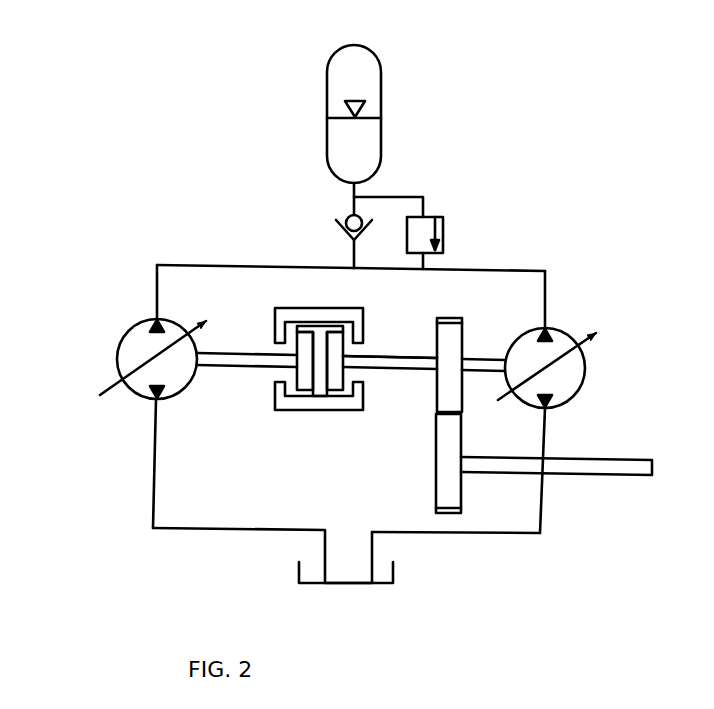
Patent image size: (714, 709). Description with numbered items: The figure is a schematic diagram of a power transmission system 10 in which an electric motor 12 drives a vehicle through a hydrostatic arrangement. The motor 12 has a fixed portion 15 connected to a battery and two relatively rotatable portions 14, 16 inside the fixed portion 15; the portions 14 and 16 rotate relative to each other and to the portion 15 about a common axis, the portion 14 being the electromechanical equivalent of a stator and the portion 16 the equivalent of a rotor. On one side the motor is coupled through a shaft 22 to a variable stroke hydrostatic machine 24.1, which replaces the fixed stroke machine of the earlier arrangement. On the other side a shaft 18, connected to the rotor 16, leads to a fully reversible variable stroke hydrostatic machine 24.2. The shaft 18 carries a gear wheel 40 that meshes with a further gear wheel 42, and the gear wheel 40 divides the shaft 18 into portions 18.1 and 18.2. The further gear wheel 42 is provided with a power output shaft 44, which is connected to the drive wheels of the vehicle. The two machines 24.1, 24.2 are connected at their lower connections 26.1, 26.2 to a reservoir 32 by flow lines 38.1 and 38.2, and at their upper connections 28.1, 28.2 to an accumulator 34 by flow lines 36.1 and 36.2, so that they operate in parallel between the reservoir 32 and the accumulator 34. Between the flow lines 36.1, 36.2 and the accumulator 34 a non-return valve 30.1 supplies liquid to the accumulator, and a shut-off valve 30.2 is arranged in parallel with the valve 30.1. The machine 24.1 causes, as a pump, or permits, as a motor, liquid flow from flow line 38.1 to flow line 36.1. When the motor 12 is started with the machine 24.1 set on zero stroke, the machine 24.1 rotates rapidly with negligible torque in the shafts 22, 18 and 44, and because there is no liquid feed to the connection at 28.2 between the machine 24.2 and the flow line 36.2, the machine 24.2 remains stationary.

The power transmission system 10 is at (522, 62).
The motor 12 is at (280, 414).
The rotatable portion 14 is at (300, 362).
The fixed portion 15 is at (305, 410).
The rotor 16 is at (333, 380).
The shaft 18 is at (431, 373).
The shaft portion 18.1 is at (385, 358).
The shaft portion 18.2 is at (471, 371).
The shaft 22 is at (232, 367).
The variable stroke hydrostatic machine 24.1 is at (108, 342).
The fully reversible variable stroke hydrostatic machine 24.2 is at (585, 393).
The connection 26.1 is at (148, 404).
The connection 26.2 is at (548, 410).
The connection 28.1 is at (152, 316).
The connection 28.2 is at (548, 322).
The non-return valve 30.1 is at (343, 213).
The shut-off valve 30.2 is at (432, 211).
The reservoir 32 is at (356, 584).
The accumulator 34 is at (398, 98).
The flow line 36.1 is at (230, 240).
The flow line 36.2 is at (489, 271).
The flow line 38.1 is at (250, 531).
The flow line 38.2 is at (430, 534).
The gear wheel 40 is at (455, 336).
The further gear wheel 42 is at (440, 476).
The power output shaft 44 is at (592, 474).